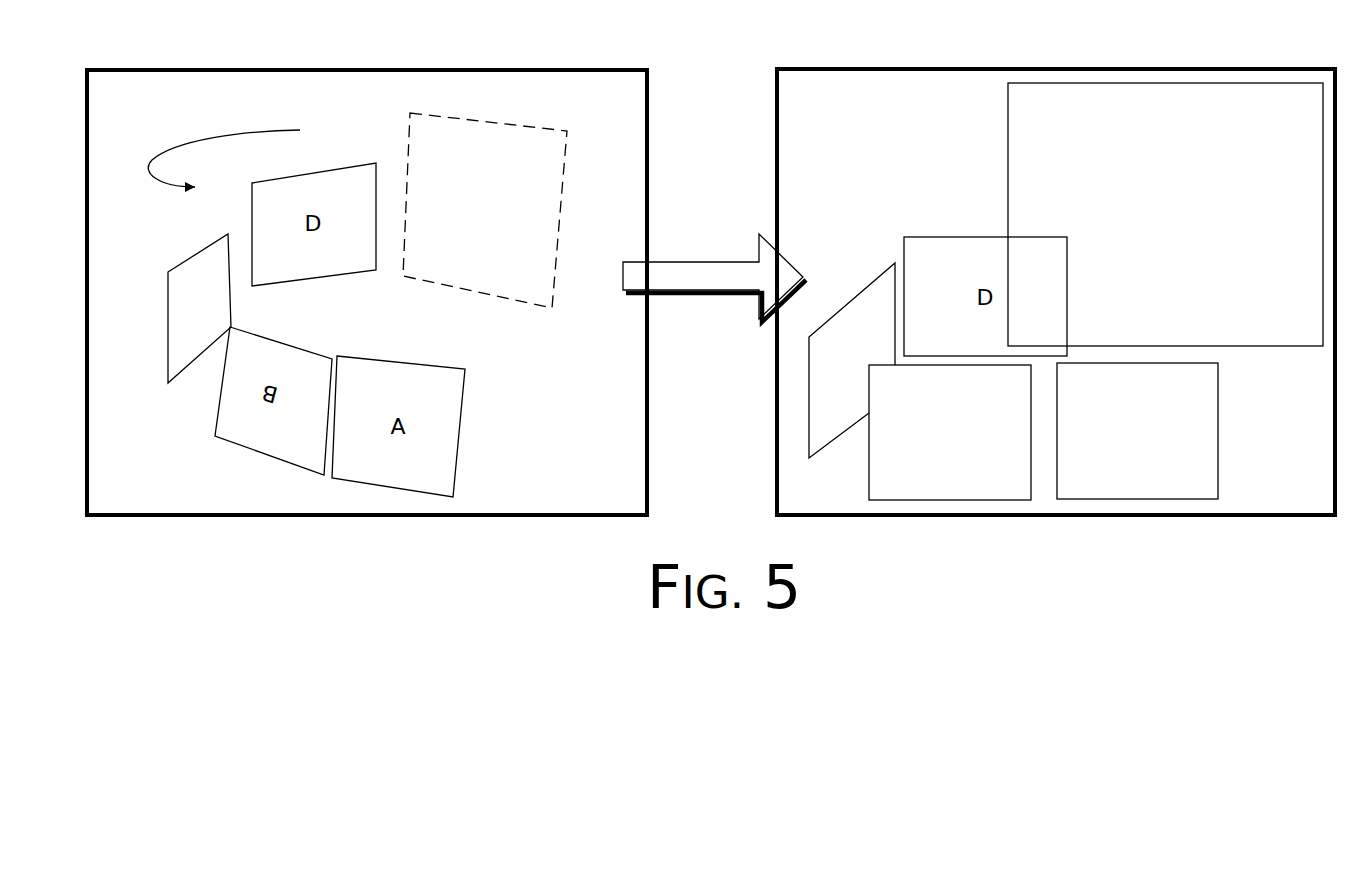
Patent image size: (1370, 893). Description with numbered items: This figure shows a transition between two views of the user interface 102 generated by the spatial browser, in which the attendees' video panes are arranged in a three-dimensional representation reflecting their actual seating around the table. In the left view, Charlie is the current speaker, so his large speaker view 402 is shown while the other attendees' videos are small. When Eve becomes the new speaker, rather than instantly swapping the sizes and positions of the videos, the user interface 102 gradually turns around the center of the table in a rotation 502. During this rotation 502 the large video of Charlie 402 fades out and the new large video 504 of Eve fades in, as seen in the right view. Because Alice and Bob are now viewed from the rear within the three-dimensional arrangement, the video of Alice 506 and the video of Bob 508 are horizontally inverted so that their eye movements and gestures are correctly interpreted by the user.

The user interface 102 is at (395, 54).
The speaker view 402 is at (190, 257).
The rotation 502 is at (203, 138).
The new large video 504 is at (515, 118).
The video of Alice 506 is at (1222, 407).
The video of Bob 508 is at (869, 474).